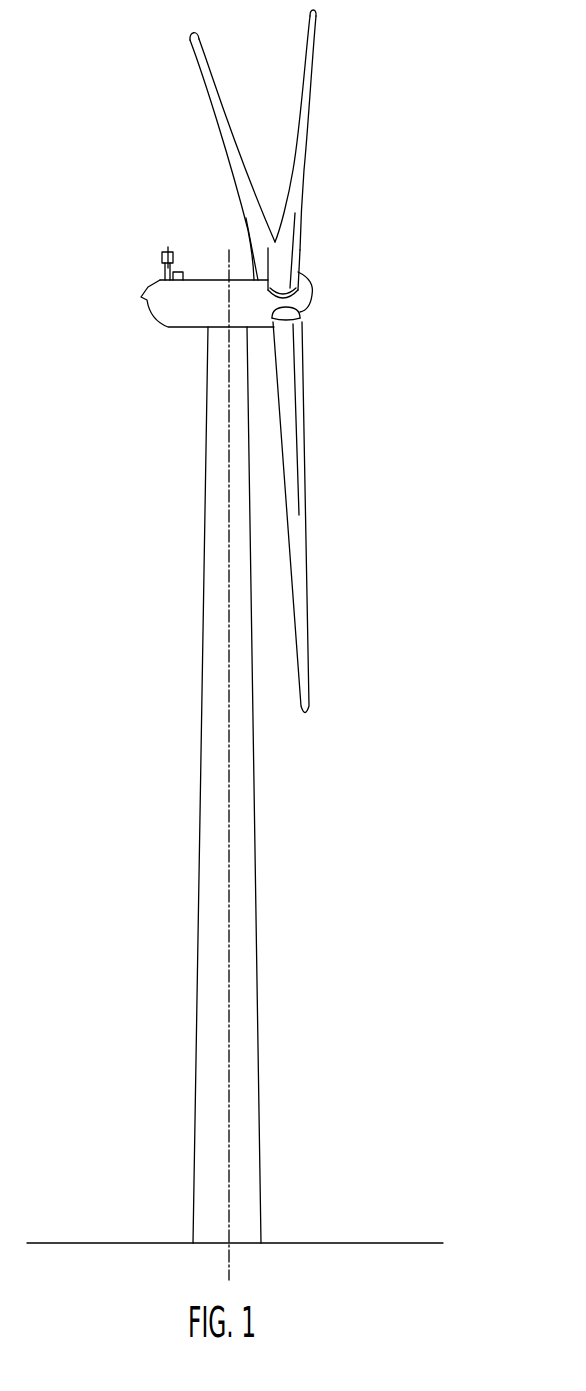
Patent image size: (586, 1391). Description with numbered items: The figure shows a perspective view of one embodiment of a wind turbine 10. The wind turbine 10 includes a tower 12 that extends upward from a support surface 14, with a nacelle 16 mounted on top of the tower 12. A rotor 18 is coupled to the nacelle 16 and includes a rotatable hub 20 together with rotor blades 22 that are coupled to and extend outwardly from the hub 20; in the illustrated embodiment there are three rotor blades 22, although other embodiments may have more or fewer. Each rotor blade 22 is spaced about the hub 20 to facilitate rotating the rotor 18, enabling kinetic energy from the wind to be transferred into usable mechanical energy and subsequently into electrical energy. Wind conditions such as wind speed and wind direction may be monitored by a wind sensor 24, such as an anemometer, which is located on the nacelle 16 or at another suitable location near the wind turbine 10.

The wind turbine 10 is at (271, 645).
The tower 12 is at (197, 1027).
The support surface 14 is at (110, 1242).
The nacelle 16 is at (183, 330).
The rotor 18 is at (287, 361).
The rotatable hub 20 is at (312, 305).
The rotor blade 22 is at (297, 138).
The wind sensor 24 is at (155, 252).